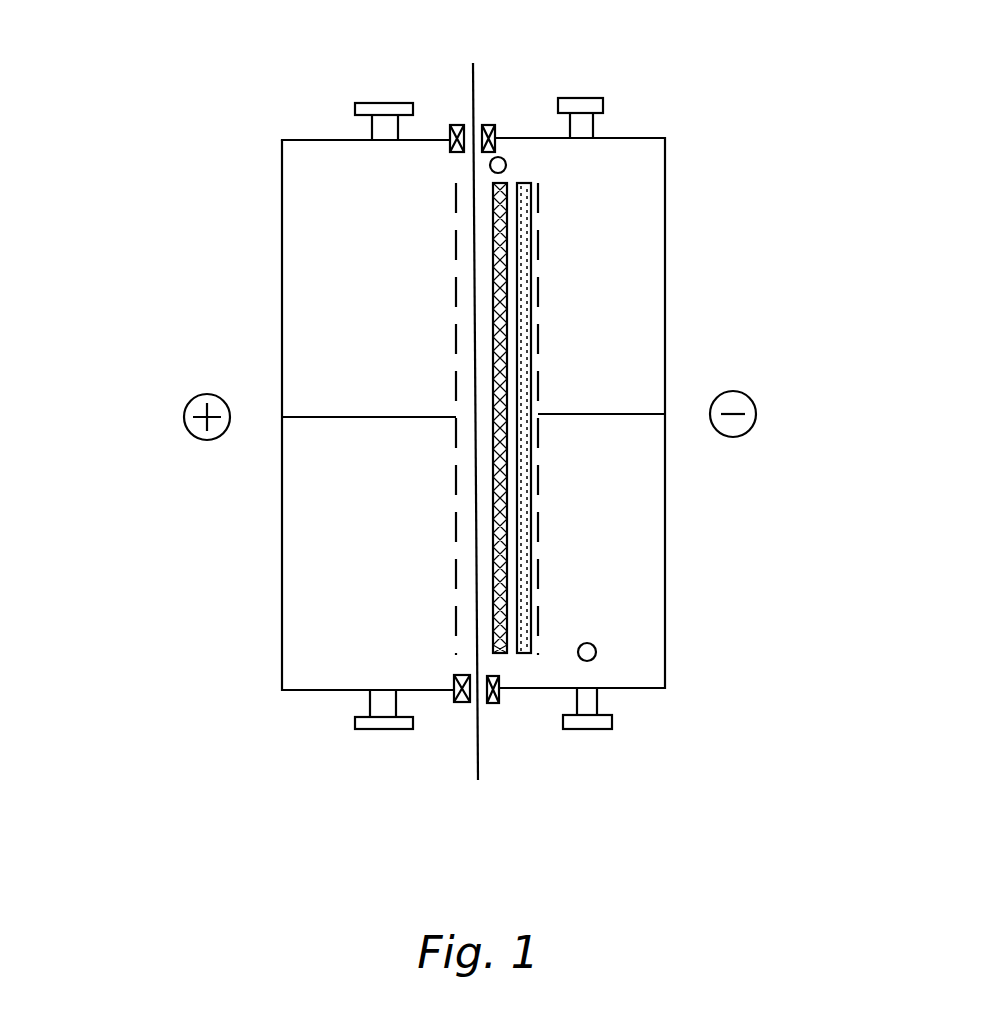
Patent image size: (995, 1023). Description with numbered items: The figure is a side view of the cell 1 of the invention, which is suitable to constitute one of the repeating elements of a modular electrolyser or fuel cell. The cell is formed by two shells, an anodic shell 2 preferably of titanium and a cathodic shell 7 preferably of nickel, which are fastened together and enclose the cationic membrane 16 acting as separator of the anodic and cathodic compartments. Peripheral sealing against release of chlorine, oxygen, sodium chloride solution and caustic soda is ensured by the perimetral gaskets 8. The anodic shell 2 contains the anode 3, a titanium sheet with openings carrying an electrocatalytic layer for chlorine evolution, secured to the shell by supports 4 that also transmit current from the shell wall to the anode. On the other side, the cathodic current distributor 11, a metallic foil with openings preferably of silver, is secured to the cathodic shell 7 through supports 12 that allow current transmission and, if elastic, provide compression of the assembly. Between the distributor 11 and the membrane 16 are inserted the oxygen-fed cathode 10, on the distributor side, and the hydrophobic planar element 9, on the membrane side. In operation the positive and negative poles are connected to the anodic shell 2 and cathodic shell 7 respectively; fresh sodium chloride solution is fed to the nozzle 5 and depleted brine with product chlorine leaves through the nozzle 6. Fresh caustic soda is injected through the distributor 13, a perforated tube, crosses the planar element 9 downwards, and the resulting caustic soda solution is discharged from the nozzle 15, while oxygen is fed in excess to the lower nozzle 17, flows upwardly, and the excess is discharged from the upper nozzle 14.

The cell 1 is at (205, 197).
The anodic shell 2 is at (280, 522).
The anode 3 is at (455, 633).
The supports 4 is at (383, 416).
The nozzle 5 is at (363, 725).
The nozzle 6 is at (385, 130).
The cathodic shell 7 is at (667, 302).
The perimetral gaskets 8 is at (492, 127).
The hydrophobic planar element 9 is at (500, 655).
The oxygen-fed cathode 10 is at (525, 655).
The cathodic current distributor 11 is at (538, 239).
The supports 12 is at (590, 413).
The distributor 13 is at (506, 160).
The upper nozzle 14 is at (594, 124).
The nozzle 15 is at (600, 702).
The cationic membrane 16 is at (474, 88).
The lower nozzle 17 is at (597, 653).